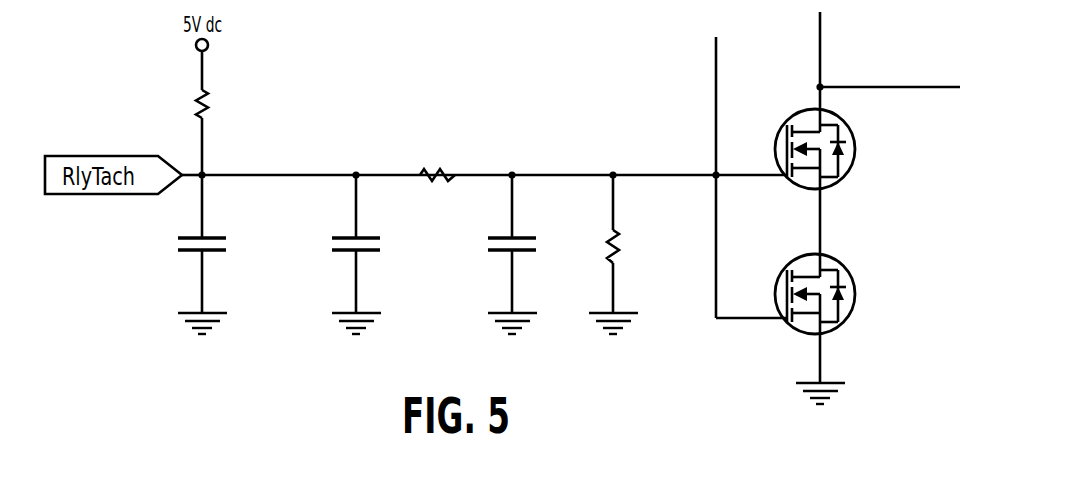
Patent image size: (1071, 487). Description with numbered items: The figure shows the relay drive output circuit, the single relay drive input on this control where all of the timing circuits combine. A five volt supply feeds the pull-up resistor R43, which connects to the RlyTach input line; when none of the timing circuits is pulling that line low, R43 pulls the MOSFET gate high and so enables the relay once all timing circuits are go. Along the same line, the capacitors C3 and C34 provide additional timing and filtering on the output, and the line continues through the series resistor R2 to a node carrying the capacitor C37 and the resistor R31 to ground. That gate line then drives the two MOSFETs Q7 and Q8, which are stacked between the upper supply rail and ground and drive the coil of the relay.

The pull-up resistor R43 is at (237, 113).
The capacitor C3 is at (235, 254).
The capacitor C34 is at (389, 254).
The series resistor 1.0k R2 is at (437, 178).
The capacitor 0.1uF C37 is at (535, 254).
The resistor 1.0M R31 is at (625, 254).
The MOSFET Q7 is at (857, 177).
The MOSFET Q8 is at (854, 316).